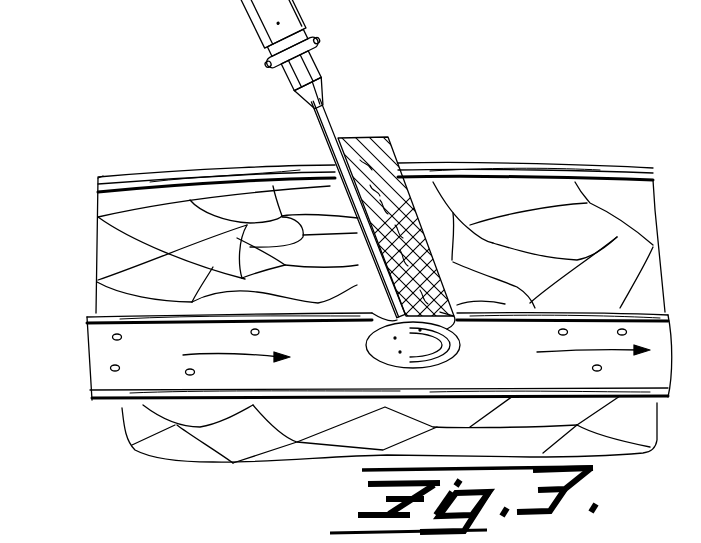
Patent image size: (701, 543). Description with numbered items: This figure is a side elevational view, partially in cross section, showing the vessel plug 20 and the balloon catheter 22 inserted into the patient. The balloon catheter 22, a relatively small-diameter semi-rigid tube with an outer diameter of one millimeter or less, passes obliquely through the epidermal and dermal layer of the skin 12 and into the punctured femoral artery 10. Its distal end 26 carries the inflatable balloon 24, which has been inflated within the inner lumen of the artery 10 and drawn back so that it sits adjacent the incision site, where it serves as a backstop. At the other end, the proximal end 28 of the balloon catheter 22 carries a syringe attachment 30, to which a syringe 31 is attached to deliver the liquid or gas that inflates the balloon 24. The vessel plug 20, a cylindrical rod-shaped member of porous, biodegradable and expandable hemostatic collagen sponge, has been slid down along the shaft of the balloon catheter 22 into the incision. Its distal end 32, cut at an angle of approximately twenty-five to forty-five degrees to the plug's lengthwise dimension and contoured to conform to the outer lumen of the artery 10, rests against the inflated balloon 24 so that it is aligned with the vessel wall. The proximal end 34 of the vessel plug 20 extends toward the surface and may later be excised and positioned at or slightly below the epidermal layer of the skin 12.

The artery 10 is at (108, 348).
The skin 12 is at (108, 230).
The vessel plug 20 is at (420, 221).
The balloon catheter 22 is at (316, 134).
The inflatable balloon 24 is at (460, 354).
The distal end of balloon catheter 26 is at (378, 322).
The proximal end of balloon catheter 28 is at (320, 99).
The syringe attachment 30 is at (285, 76).
The syringe 31 is at (262, 28).
The distal end of vessel plug 32 is at (455, 320).
The proximal end of vessel plug 34 is at (369, 139).